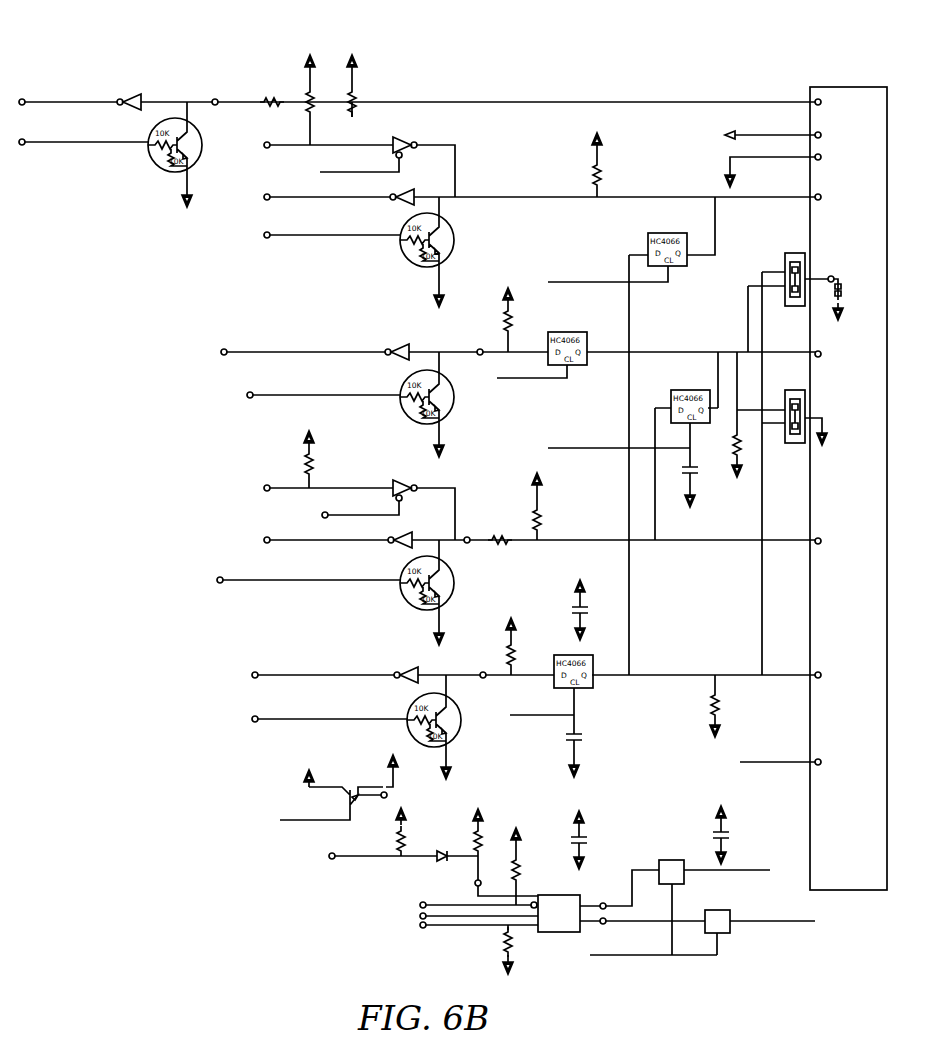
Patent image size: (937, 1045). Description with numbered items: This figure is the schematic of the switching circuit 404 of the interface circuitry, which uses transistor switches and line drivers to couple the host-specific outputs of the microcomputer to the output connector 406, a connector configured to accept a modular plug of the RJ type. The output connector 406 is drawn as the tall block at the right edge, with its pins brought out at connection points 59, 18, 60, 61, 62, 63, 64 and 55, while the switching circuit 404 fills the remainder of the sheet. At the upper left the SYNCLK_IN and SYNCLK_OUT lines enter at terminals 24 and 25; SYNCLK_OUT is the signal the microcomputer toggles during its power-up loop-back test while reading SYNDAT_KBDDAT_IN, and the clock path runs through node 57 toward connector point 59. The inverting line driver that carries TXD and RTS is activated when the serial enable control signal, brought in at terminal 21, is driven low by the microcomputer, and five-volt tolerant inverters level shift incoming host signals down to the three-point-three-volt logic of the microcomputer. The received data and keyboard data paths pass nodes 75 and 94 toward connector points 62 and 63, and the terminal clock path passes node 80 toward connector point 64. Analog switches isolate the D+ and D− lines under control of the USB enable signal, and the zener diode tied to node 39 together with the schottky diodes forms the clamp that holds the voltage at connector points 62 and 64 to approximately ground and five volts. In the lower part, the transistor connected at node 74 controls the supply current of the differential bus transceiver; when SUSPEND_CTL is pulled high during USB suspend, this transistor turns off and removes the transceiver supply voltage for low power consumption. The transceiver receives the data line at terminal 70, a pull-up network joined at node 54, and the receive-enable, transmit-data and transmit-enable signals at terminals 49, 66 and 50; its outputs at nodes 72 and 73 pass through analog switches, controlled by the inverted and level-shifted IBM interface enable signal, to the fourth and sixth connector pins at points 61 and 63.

The switching circuit 404 is at (213, 733).
The output connector 406 is at (853, 87).
The SYNCLK_IN terminal 24 is at (27, 97).
The SYNCLK_OUT terminal 25 is at (27, 137).
The SYN_CLK node terminal 57 is at (222, 98).
The RXD_TERMDATA node terminal 75 is at (486, 348).
The IBM_B_OUT node terminal 94 is at (473, 535).
The CTS_TERMCLK node terminal 80 is at (489, 671).
The RS232_EN* terminal 21 is at (331, 511).
The CR6 terminal 39 is at (835, 273).
The Q14 terminal 74 is at (385, 786).
The IBM_RXD terminal 70 is at (327, 851).
The RN2 node terminal 54 is at (485, 884).
The RS485_RX_EN* terminal 49 is at (429, 901).
The IBM_TXD terminal 66 is at (429, 913).
The RS485_RX_EN terminal 50 is at (429, 930).
The U13 A output terminal 72 is at (609, 902).
The U13 B output terminal 73 is at (609, 917).
The RJ45 pin 1 terminal 59 is at (823, 97).
The RJ45 pin 2 terminal 18 is at (823, 130).
The RJ45 pin 3 terminal 60 is at (823, 152).
The RJ45 pin 4 terminal 61 is at (823, 192).
The RJ45 pin 5 terminal 62 is at (823, 349).
The RJ45 pin 6 terminal 63 is at (823, 536).
The RJ45 pin 7 terminal 64 is at (823, 670).
The RJ45 pin 8 terminal 55 is at (823, 757).